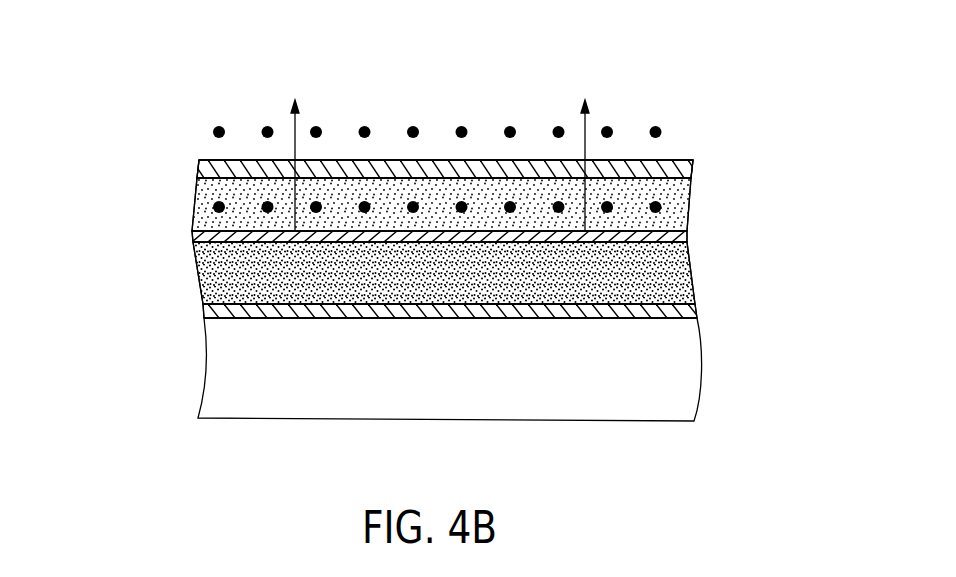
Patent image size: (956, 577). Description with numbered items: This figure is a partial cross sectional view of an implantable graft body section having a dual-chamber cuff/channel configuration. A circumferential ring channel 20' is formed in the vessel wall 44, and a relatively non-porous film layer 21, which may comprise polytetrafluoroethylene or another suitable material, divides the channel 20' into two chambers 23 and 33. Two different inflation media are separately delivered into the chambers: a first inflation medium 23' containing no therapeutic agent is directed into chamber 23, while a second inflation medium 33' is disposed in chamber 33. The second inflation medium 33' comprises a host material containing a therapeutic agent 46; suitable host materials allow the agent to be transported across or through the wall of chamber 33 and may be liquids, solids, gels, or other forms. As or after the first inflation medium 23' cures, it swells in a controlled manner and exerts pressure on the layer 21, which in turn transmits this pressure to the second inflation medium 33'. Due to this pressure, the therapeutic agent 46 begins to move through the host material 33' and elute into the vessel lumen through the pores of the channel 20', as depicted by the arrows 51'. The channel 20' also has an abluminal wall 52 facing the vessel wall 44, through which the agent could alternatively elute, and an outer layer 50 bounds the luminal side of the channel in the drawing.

The vessel wall 44 is at (223, 380).
The abluminal wall 52 is at (436, 238).
The circumferential ring channel 20' is at (500, 219).
The top barrier layer 50 is at (212, 160).
The chamber 33 is at (374, 204).
The second inflation medium 33' is at (374, 204).
The non-porous film layer 21 is at (193, 237).
The chamber 23 is at (510, 272).
The first inflation medium 23' is at (510, 272).
The therapeutic agent 46 is at (660, 130).
The arrows 51' is at (443, 146).